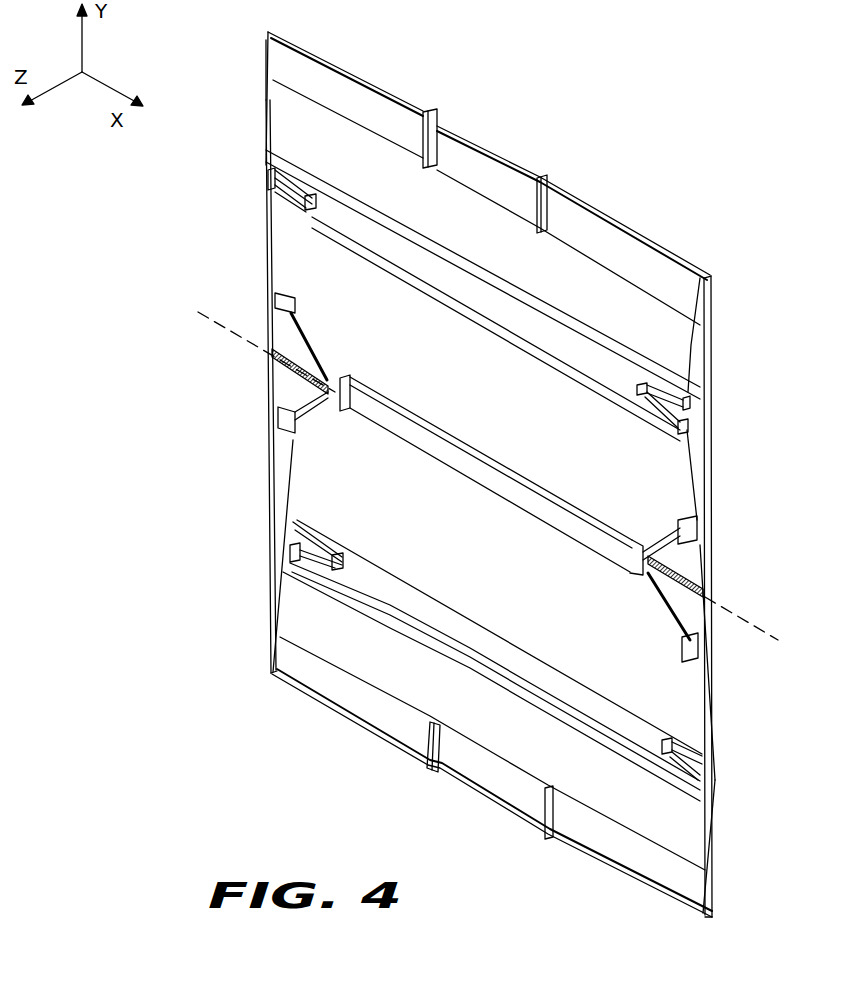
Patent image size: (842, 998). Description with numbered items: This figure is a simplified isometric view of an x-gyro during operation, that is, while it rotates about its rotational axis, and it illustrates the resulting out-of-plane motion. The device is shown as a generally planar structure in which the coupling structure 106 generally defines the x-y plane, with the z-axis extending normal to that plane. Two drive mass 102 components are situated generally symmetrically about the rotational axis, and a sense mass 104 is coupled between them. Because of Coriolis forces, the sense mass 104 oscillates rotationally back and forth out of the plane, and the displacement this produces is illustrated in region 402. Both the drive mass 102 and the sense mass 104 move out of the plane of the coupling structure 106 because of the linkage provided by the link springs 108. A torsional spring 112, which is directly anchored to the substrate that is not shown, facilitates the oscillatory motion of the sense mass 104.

The drive mass 102 is at (668, 348).
The sense mass 104 is at (285, 257).
The coupling structure 106 is at (268, 385).
The link springs 108 is at (268, 178).
The torsional spring 112 is at (687, 573).
The region 402 is at (248, 552).